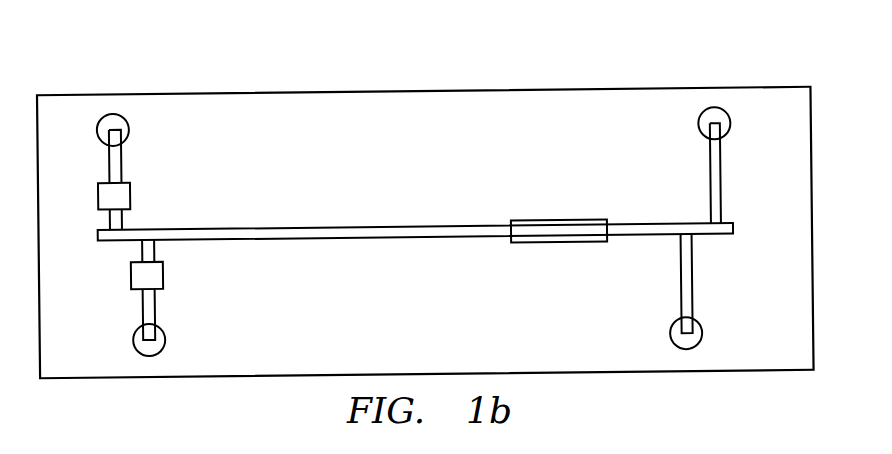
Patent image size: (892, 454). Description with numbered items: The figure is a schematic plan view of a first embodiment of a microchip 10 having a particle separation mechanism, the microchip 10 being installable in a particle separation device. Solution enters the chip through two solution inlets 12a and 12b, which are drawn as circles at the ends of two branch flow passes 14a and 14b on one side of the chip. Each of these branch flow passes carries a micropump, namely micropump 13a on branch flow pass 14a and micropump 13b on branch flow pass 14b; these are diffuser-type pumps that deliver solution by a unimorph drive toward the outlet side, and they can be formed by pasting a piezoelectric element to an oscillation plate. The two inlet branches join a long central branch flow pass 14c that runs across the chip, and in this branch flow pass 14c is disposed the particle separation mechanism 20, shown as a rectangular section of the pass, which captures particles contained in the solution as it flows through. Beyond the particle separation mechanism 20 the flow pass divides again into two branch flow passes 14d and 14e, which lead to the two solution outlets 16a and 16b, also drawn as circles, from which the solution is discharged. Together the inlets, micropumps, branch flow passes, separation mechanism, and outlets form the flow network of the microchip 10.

The microchip 10 is at (476, 62).
The solution inlet 12a is at (130, 124).
The solution inlet 12b is at (164, 342).
The micropump 13a is at (130, 192).
The micropump 13b is at (162, 272).
The branch flow pass 14a is at (122, 162).
The branch flow pass 14b is at (154, 302).
The branch flow pass 14c is at (323, 231).
The branch flow pass 14d is at (721, 178).
The branch flow pass 14e is at (692, 273).
The solution outlet 16a is at (700, 125).
The solution outlet 16b is at (669, 334).
The particle separation mechanism 20 is at (560, 228).